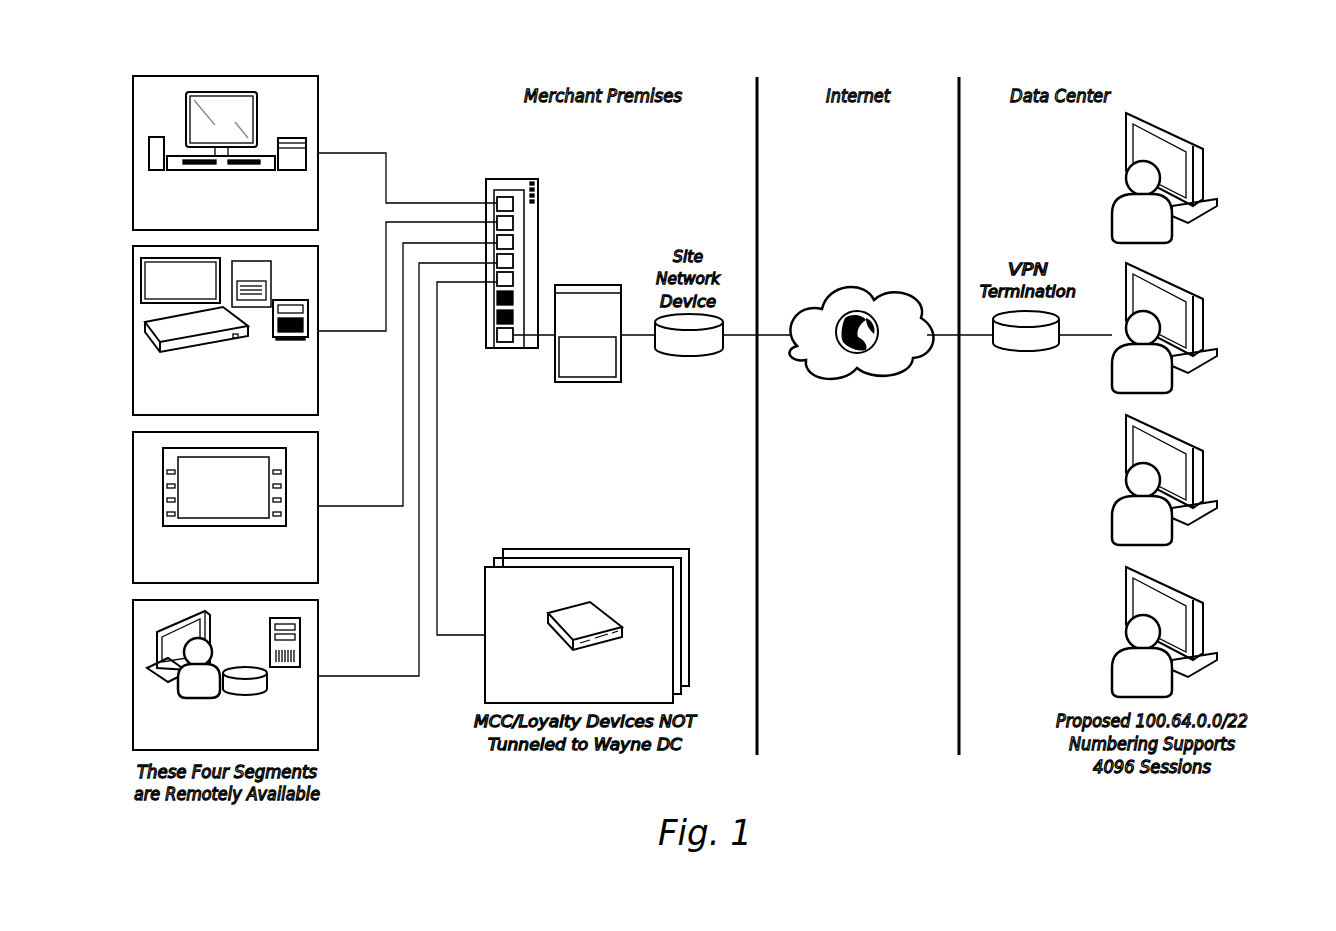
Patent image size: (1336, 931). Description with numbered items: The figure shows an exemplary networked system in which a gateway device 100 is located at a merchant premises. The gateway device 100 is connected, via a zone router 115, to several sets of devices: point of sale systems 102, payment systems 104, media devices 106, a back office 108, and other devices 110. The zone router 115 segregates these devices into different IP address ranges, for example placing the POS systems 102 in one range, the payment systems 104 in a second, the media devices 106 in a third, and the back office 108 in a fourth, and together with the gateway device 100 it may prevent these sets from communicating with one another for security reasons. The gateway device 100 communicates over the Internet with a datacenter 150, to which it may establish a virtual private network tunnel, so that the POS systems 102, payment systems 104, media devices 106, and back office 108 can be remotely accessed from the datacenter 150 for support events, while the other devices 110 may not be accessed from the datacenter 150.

The gateway device 100 is at (587, 382).
The point of sale (POS) systems 102 is at (133, 113).
The payment systems 104 is at (133, 285).
The media devices 106 is at (133, 453).
The back office 108 is at (133, 620).
The other devices 110 is at (485, 667).
The zone router 115 is at (512, 348).
The datacenter 150 is at (1205, 168).